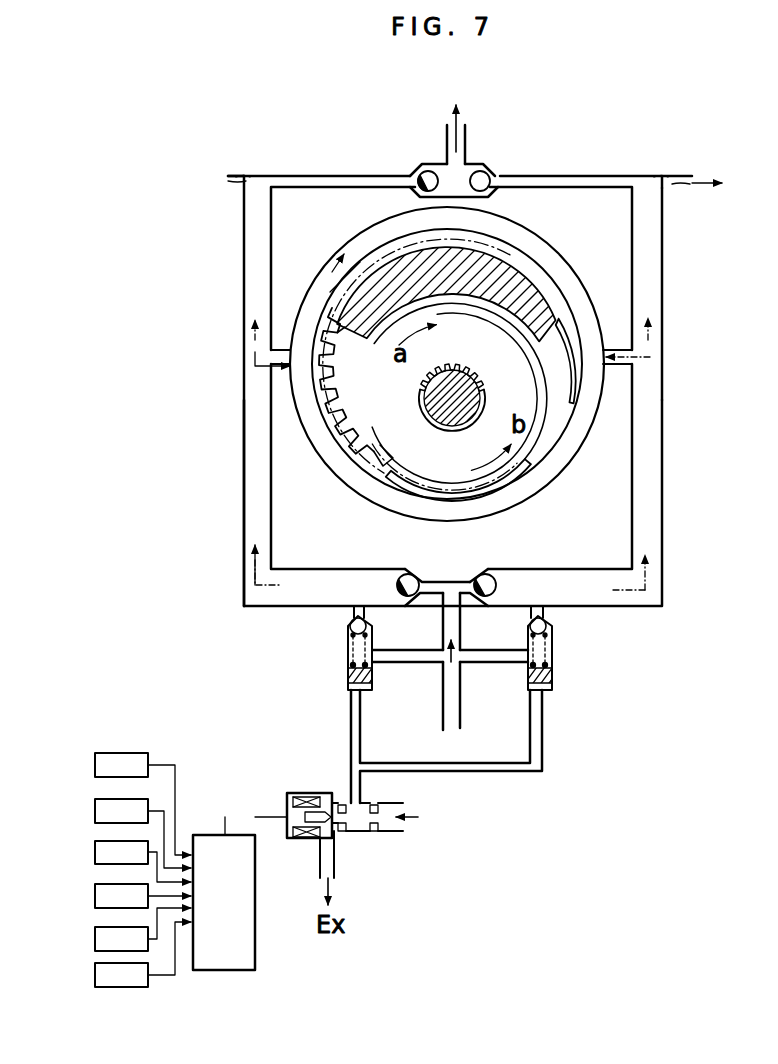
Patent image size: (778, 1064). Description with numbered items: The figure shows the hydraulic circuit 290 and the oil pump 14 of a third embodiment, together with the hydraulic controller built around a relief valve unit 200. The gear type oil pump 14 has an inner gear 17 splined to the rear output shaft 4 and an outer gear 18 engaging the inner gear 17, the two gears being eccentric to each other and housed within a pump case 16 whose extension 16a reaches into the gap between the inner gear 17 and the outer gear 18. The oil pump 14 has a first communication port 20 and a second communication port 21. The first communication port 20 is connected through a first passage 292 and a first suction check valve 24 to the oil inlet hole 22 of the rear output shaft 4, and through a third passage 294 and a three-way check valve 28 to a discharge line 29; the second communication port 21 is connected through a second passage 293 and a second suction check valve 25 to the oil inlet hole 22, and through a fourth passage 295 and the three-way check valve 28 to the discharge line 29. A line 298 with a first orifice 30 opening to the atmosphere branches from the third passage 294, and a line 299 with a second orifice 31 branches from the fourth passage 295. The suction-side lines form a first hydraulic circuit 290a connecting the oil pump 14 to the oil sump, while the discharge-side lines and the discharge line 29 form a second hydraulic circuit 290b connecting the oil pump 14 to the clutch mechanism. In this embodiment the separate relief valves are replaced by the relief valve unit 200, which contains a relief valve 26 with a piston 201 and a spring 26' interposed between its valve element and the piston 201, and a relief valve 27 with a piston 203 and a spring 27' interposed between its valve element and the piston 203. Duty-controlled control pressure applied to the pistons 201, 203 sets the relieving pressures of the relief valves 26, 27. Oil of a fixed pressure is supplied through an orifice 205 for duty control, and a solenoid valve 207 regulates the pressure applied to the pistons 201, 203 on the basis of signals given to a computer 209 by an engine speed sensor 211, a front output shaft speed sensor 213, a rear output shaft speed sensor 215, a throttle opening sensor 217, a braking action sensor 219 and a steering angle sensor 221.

The rear output shaft 4 is at (470, 372).
The oil pump 14 is at (322, 264).
The pump case 16 is at (530, 264).
The extension 16a is at (388, 262).
The inner gear 17 is at (466, 421).
The outer gear 18 is at (336, 464).
The first communication port 20 is at (330, 410).
The second communication port 21 is at (611, 394).
The oil inlet hole 22 is at (452, 710).
The first suction check valve 24 is at (406, 574).
The second suction check valve 25 is at (486, 574).
The relief valve 26 is at (334, 648).
The spring 26' is at (334, 665).
The relief valve 27 is at (563, 648).
The spring 27' is at (569, 665).
The three-way check valve 28 is at (426, 170).
The discharge line 29 is at (470, 138).
The first orifice 30 is at (242, 172).
The second orifice 31 is at (658, 172).
The relief valve unit 200 is at (332, 736).
The piston 201 is at (354, 682).
The piston 203 is at (556, 682).
The orifice 205 is at (374, 829).
The solenoid valve 207 is at (294, 838).
The computer 209 is at (225, 972).
The engine speed sensor 211 is at (95, 766).
The front output shaft speed sensor 213 is at (95, 812).
The rear output shaft speed sensor 215 is at (95, 853).
The throttle opening sensor 217 is at (95, 896).
The braking action sensor 219 is at (95, 939).
The steering angle sensor 221 is at (95, 975).
The hydraulic circuit 290 is at (244, 326).
The first hydraulic circuit 290a is at (242, 480).
The second hydraulic circuit 290b is at (244, 246).
The first passage 292 is at (244, 508).
The second passage 293 is at (662, 523).
The third passage 294 is at (244, 276).
The fourth passage 295 is at (662, 276).
The line 298 is at (228, 175).
The line 299 is at (676, 188).